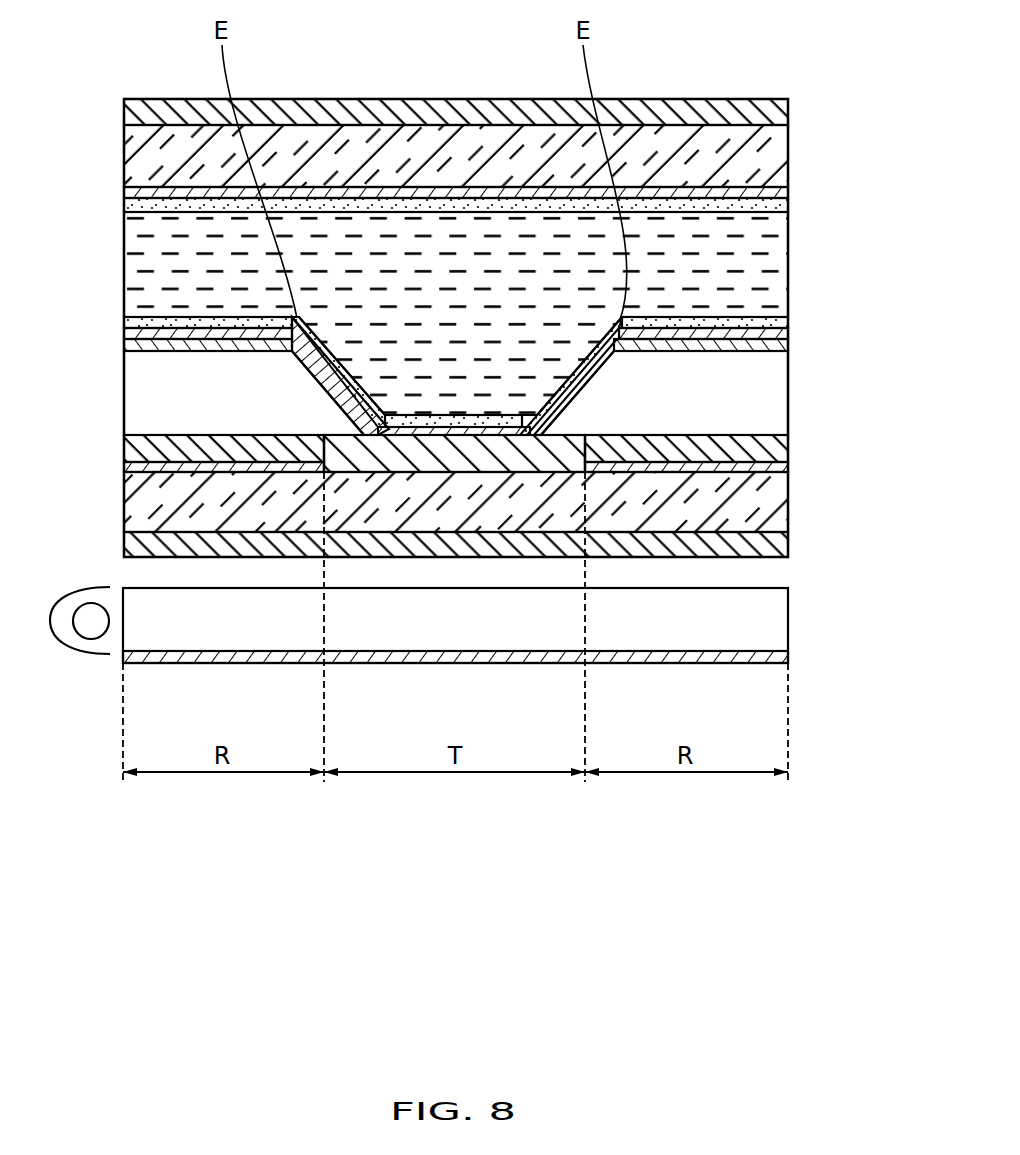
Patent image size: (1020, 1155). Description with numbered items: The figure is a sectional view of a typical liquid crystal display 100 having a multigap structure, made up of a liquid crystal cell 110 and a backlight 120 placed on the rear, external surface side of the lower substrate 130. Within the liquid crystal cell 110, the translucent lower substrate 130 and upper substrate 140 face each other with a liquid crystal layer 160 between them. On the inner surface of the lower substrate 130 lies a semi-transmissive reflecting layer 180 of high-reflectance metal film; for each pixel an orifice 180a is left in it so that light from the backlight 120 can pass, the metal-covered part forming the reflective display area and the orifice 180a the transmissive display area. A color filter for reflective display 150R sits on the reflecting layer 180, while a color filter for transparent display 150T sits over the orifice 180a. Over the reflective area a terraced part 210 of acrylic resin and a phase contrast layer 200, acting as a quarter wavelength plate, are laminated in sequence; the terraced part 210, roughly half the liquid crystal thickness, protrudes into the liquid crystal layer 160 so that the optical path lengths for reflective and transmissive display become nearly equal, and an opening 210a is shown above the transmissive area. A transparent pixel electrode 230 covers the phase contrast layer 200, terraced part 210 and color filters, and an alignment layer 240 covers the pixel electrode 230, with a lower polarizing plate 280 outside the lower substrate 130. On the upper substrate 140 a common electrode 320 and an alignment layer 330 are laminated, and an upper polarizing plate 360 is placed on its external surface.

The liquid crystal display 100 is at (693, 80).
The liquid crystal cell 110 is at (113, 103).
The backlight 120 is at (65, 577).
The lower substrate 130 is at (776, 508).
The upper substrate 140 is at (788, 150).
The color filter for reflective display 150R is at (776, 440).
The color filter for transparent display 150T is at (463, 458).
The liquid crystal layer 160 is at (788, 263).
The semi-transmissive reflecting layer 180 is at (788, 467).
The orifice 180a is at (578, 466).
The phase contrast layer 200 is at (788, 348).
The terraced part 210 is at (776, 393).
The opening of organic insulating layer 210a is at (383, 437).
The pixel electrode 230 is at (788, 334).
The alignment layer 240 is at (788, 320).
The lower polarizing plate 280 is at (788, 545).
The common electrode 320 is at (788, 190).
The alignment layer 330 is at (788, 207).
The upper polarizing plate 360 is at (788, 104).